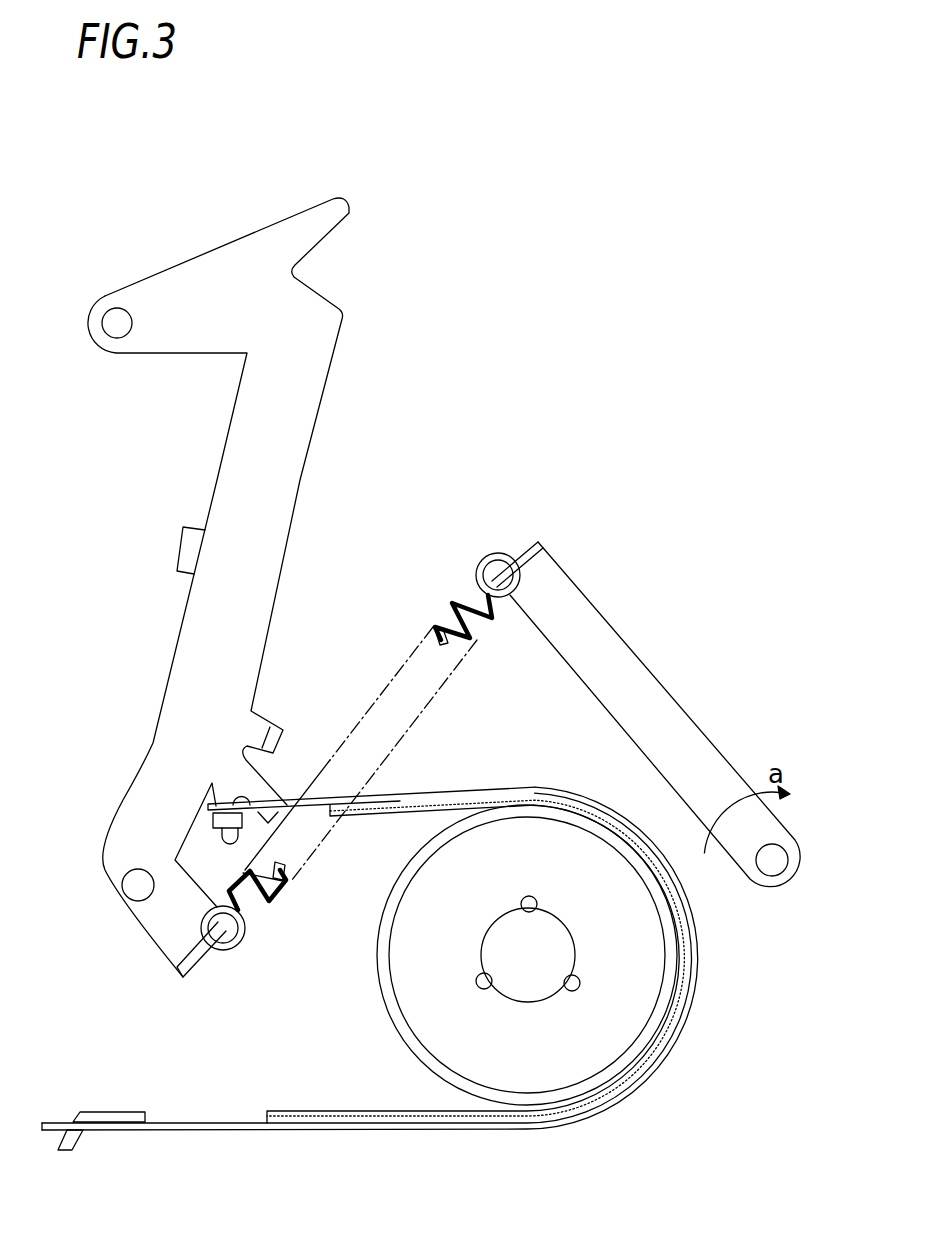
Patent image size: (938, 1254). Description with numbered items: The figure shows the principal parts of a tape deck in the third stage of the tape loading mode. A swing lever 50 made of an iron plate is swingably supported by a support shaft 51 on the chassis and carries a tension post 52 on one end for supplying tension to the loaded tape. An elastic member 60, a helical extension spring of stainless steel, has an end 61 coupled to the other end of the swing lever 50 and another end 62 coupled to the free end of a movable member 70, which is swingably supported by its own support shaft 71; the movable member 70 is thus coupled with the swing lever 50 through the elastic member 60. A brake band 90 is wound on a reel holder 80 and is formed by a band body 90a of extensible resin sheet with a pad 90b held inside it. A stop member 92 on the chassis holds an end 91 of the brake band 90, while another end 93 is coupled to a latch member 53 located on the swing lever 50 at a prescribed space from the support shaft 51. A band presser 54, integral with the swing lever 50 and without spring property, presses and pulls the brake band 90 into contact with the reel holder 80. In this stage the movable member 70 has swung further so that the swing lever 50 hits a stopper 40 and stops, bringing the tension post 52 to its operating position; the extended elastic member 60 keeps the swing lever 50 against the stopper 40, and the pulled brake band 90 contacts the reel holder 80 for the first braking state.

The stopper 40 is at (178, 552).
The swing lever 50 is at (221, 445).
The support shaft 51 is at (121, 885).
The tension post 52 is at (104, 323).
The latch member 53 is at (227, 820).
The band presser 54 is at (258, 735).
The elastic member 60 is at (323, 843).
The end of the elastic member 61 is at (227, 951).
The another end of the elastic member 62 is at (502, 551).
The movable member 70 is at (668, 690).
The support shaft 71 is at (773, 860).
The reel holder 80 is at (411, 997).
The brake band 90 is at (413, 958).
The band body 90a is at (694, 957).
The pad 90b is at (684, 989).
The end of the brake band 91 is at (135, 1131).
The stop member 92 is at (83, 1141).
The another end of the brake band 93 is at (212, 807).